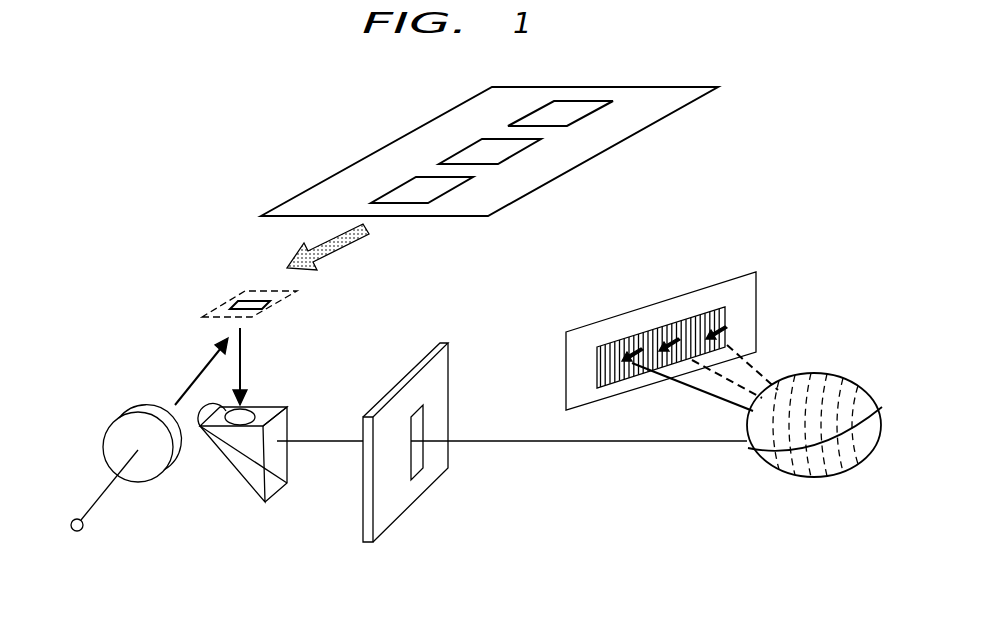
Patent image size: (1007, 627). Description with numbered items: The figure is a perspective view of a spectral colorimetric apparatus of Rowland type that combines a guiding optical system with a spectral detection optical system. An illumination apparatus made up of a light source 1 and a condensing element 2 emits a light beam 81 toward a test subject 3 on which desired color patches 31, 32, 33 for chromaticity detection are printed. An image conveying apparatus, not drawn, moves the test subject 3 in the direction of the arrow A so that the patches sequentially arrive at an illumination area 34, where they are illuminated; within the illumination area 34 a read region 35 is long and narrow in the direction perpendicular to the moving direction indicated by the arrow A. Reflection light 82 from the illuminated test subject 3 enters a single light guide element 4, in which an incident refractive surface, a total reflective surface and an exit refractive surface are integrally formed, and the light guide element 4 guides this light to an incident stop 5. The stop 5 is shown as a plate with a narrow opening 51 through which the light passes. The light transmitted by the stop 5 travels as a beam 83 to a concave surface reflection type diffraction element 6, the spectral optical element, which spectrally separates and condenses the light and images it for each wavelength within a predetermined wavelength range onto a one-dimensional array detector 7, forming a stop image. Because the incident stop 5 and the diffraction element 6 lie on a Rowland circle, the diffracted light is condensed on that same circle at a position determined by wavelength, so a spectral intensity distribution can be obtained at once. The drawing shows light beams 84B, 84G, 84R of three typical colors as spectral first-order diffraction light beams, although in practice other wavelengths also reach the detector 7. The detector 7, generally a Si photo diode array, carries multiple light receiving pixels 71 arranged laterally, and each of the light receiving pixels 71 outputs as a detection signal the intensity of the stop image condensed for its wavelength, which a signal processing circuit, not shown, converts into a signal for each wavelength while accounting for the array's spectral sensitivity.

The light source 1 is at (70, 522).
The condensing element 2 is at (104, 432).
The test subject 3 is at (278, 206).
The color patch 31 is at (535, 110).
The color patch 32 is at (476, 142).
The color patch 33 is at (402, 185).
The illumination area 34 is at (232, 300).
The read region 35 is at (210, 312).
The light guide element 4 is at (245, 482).
The incident stop 5 is at (387, 530).
The slit 51 is at (415, 478).
The concave surface reflection type diffraction element 6 is at (795, 478).
The one-dimensional array detector 7 is at (733, 279).
The light receiving pixels 71 is at (727, 327).
The light beam 81 is at (192, 380).
The reflection light 82 is at (243, 358).
The light beam projected to eye 83 is at (605, 443).
The light beam 84B is at (620, 360).
The light beam 84G is at (660, 350).
The light beam 84R is at (708, 338).
The arrow A is at (290, 257).